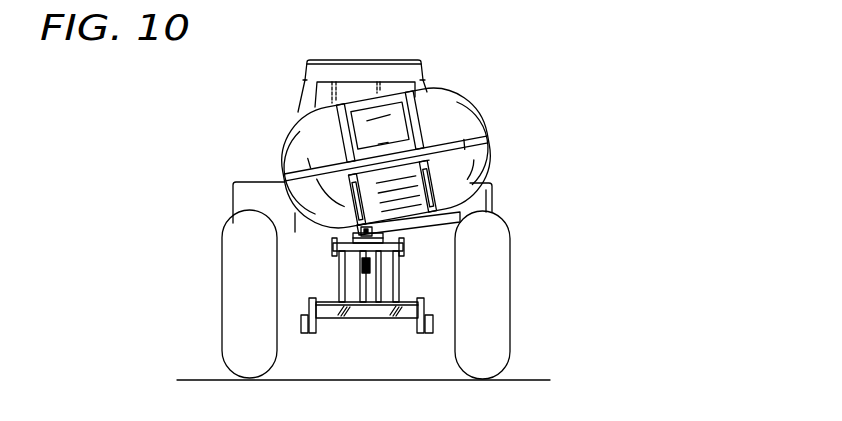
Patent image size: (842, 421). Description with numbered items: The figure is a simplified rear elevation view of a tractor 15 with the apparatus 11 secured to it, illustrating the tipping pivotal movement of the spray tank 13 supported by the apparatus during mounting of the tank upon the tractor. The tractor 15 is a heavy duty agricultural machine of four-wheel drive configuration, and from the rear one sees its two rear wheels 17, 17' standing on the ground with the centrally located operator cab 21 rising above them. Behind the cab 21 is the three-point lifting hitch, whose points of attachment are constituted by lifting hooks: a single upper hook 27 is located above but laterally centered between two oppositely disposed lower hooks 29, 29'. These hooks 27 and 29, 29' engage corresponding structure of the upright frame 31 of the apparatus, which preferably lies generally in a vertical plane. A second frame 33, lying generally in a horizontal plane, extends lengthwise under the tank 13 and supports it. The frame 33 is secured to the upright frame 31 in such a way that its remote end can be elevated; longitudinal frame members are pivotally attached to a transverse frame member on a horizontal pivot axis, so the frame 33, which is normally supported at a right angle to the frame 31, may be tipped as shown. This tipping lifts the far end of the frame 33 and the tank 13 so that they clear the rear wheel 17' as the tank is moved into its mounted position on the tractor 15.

The apparatus 11 is at (362, 330).
The spray tank 13 is at (447, 100).
The tractor 15 is at (296, 95).
The rear wheel 17 is at (218, 294).
The rear wheel 17' is at (520, 295).
The cab 21 is at (366, 58).
The upper hook 27 is at (363, 278).
The lower hook 29 is at (321, 346).
The lower hook 29' is at (416, 346).
The upright frame 31 is at (427, 268).
The second frame 33 is at (430, 226).